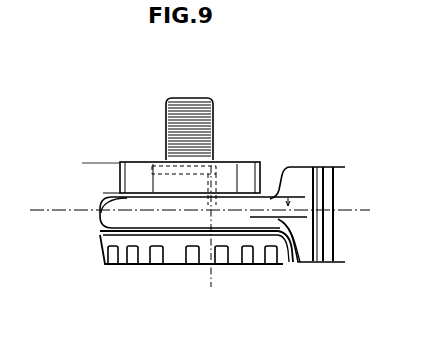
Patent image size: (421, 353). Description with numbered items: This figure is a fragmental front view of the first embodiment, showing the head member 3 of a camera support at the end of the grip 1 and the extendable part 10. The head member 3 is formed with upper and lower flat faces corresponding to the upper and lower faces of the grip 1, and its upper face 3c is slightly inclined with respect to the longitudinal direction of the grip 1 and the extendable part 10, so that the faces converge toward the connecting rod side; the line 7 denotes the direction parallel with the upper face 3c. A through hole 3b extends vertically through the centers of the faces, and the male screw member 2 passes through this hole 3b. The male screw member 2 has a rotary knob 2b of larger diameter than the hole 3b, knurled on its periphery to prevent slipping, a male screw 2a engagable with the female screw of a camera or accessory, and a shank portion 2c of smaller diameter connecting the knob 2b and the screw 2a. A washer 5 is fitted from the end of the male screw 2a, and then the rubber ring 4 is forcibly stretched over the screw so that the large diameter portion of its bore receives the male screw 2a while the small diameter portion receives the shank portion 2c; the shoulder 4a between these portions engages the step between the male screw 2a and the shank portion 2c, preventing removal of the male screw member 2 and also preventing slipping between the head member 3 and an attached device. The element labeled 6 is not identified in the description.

The grip 1 is at (334, 263).
The male screw member 2 is at (250, 270).
The male screw 2a is at (202, 125).
The rotary knob 2b is at (147, 262).
The shank portion 2c is at (214, 194).
The head member 3 is at (104, 226).
The through hole 3b is at (211, 238).
The upper face 3c is at (100, 212).
The rubber ring 4 is at (121, 162).
The shoulder 4a is at (152, 178).
The washer 5 is at (103, 193).
The bent clip 6 is at (268, 196).
The direction parallel with upper plane 7 is at (296, 264).
The extendable part 10 is at (412, 34).